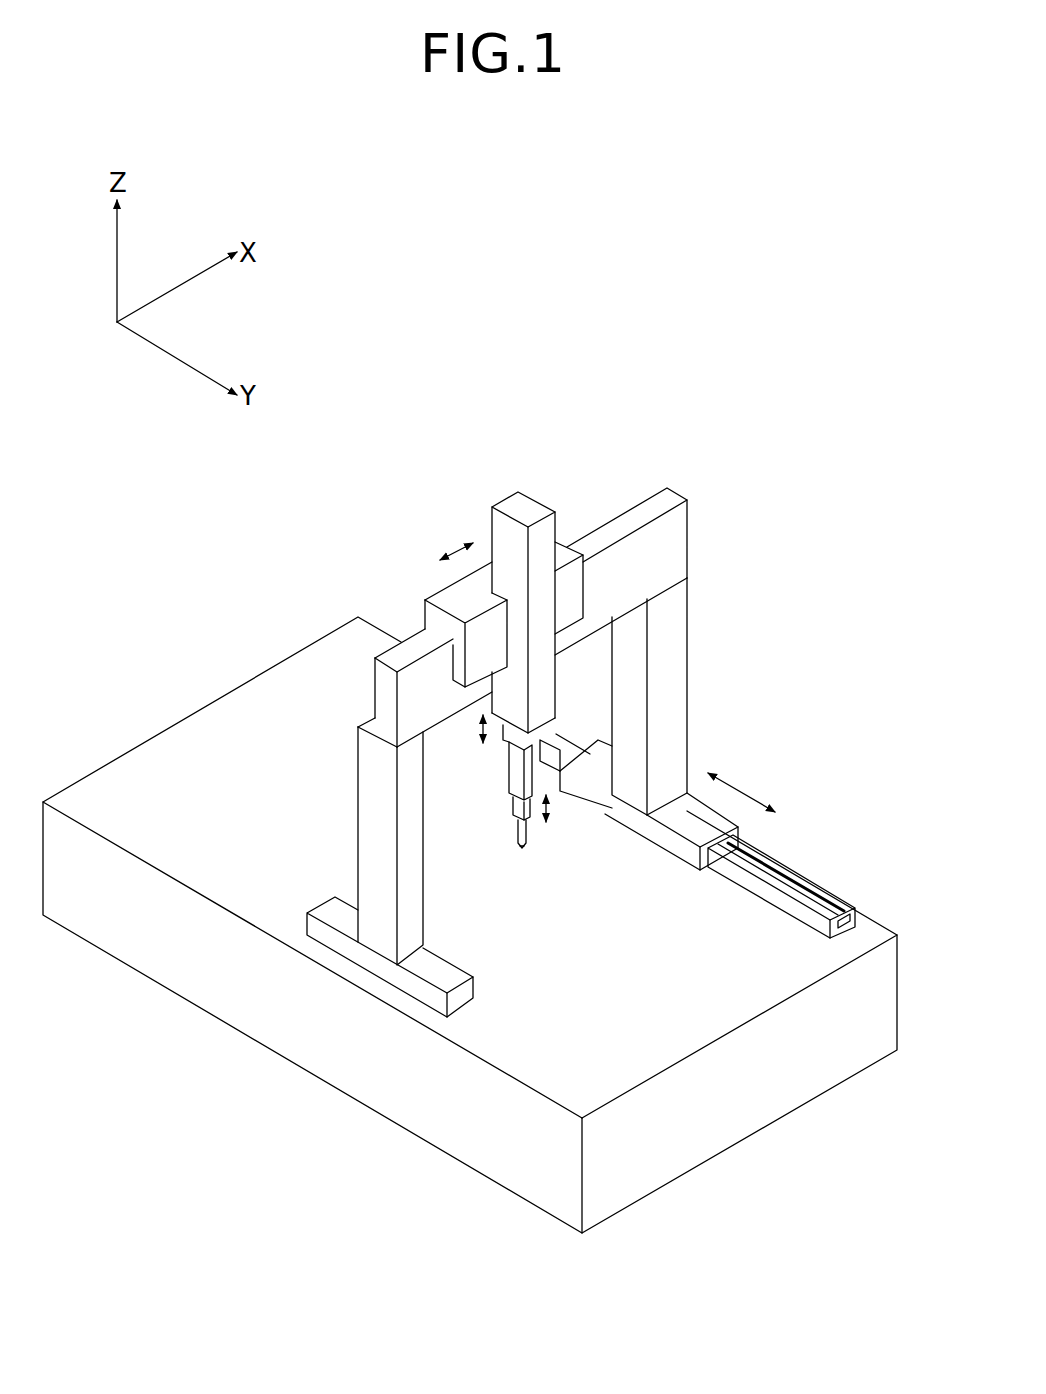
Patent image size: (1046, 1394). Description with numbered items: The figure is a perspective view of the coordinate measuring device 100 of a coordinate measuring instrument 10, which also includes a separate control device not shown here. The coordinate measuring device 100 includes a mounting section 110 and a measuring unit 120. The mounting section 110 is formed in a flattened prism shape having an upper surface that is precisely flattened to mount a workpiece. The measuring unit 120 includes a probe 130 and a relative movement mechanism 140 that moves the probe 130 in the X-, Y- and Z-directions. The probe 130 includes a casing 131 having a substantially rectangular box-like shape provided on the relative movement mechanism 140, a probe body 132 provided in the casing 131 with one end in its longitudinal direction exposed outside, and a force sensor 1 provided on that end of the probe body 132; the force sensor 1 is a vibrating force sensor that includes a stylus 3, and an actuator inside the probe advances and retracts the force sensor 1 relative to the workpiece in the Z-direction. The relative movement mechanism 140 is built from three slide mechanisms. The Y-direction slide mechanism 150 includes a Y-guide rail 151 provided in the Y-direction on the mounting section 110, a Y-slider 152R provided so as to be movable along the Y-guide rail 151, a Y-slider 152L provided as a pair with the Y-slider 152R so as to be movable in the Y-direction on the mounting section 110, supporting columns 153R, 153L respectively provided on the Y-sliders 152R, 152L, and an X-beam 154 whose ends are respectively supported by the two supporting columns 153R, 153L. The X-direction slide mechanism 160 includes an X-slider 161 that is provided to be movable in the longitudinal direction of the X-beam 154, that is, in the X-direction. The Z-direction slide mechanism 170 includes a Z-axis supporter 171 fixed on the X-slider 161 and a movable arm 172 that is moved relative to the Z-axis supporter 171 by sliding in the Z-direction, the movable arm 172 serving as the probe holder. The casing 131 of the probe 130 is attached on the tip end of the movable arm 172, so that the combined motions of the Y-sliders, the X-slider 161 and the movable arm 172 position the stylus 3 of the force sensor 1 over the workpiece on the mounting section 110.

The force sensor 1 is at (515, 835).
The stylus 3 is at (522, 855).
The coordinate measuring instrument 10 is at (665, 1257).
The coordinate measuring device 100 is at (778, 1155).
The mounting section 110 is at (473, 1143).
The measuring unit 120 is at (723, 445).
The probe 130 is at (565, 832).
The casing 131 is at (509, 768).
The probe body 132 is at (513, 807).
The relative movement mechanism 140 is at (440, 390).
The Y-direction slide mechanism 150 is at (727, 522).
The Y-guide rail 151 is at (762, 890).
The Y-slider 152L is at (375, 958).
The Y-slider 152R is at (727, 818).
The supporting column 153L is at (366, 826).
The supporting column 153R is at (668, 692).
The X-beam 154 is at (648, 512).
The X-direction slide mechanism 160 is at (568, 457).
The X-slider 161 is at (450, 602).
The Z-direction slide mechanism 170 is at (477, 513).
The Z-axis supporter 171 is at (525, 503).
The movable arm 172 is at (495, 740).